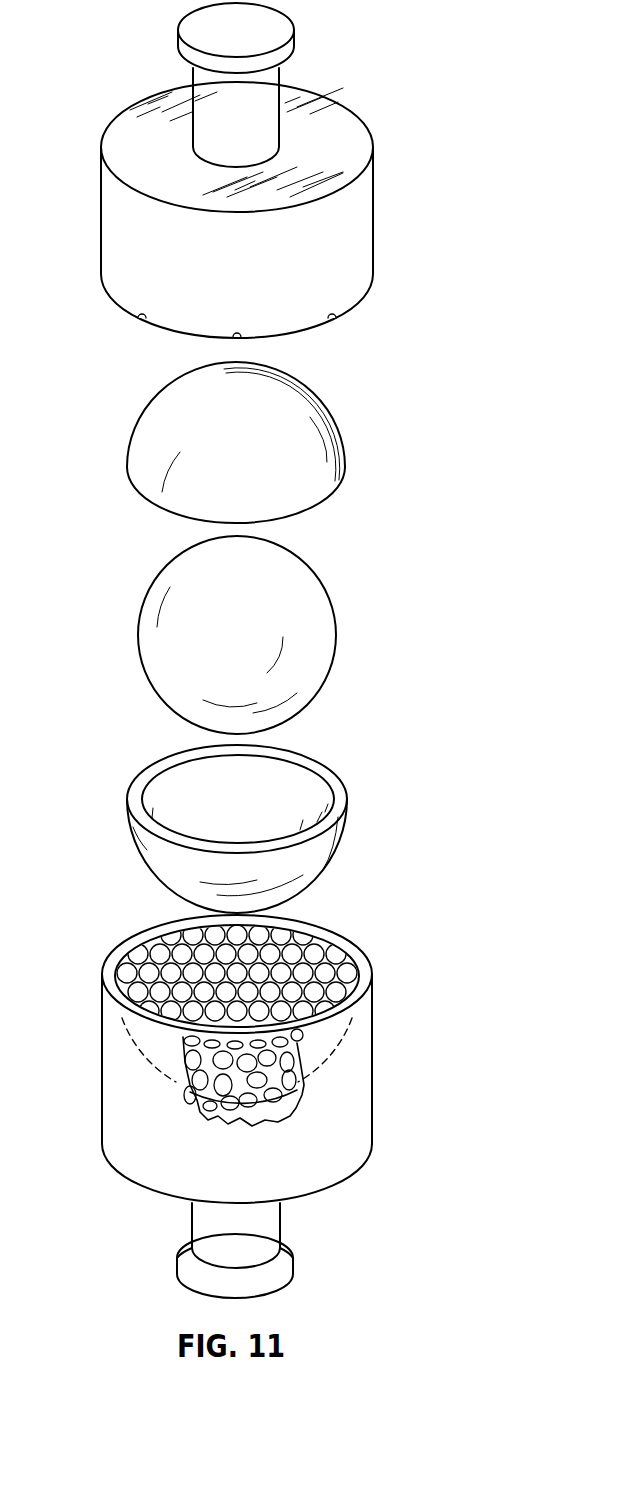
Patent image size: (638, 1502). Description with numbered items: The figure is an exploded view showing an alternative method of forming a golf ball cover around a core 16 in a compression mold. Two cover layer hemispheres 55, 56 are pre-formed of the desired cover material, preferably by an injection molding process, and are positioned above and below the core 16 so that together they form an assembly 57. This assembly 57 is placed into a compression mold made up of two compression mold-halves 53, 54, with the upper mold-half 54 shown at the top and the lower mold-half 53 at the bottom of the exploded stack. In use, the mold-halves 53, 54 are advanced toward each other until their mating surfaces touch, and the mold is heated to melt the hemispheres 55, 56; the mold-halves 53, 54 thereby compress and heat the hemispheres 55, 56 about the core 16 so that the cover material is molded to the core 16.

The assembly 57 is at (287, 650).
The compression mold-half 54 is at (357, 235).
The cover layer hemisphere 56 is at (251, 464).
The core 16 is at (252, 647).
The cover layer hemisphere 55 is at (252, 821).
The compression mold-half 53 is at (353, 1105).